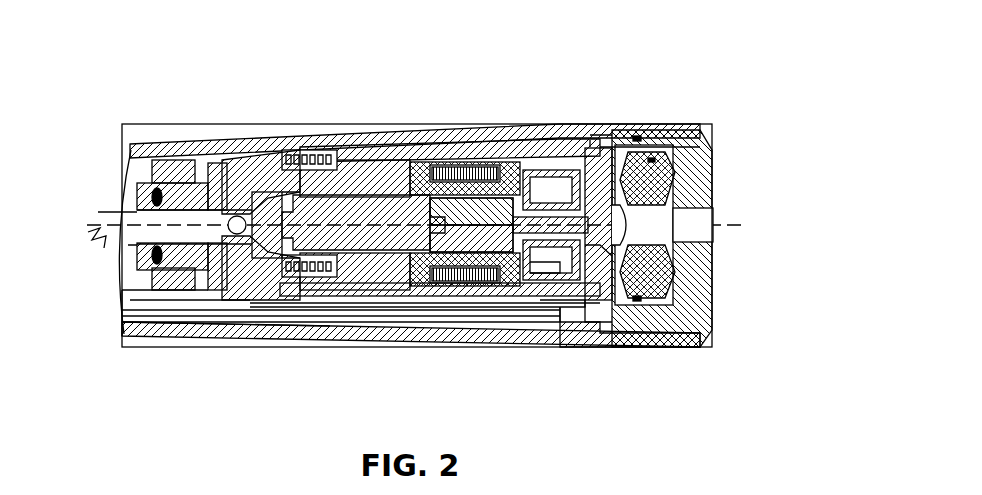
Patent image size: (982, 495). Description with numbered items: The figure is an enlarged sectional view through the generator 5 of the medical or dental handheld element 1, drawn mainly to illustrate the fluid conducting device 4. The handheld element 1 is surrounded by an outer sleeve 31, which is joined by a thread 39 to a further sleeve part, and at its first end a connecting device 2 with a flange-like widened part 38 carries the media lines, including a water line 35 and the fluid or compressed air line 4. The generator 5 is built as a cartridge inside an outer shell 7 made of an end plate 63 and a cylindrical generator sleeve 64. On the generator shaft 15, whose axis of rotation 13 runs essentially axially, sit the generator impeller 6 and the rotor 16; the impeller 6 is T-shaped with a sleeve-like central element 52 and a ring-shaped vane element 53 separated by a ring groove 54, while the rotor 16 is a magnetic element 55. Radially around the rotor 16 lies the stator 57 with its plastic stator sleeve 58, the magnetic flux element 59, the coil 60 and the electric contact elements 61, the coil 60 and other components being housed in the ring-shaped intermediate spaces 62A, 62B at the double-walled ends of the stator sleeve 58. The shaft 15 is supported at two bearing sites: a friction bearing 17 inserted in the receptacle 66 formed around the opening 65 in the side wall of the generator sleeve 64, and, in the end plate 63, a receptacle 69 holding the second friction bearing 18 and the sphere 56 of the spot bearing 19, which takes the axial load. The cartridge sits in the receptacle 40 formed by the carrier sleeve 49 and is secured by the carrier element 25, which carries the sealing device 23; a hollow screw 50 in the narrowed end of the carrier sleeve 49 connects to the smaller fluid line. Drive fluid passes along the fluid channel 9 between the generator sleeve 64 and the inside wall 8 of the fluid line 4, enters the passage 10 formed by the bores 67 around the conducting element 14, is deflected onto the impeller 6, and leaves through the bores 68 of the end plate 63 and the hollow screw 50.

The handheld element 1 is at (475, 55).
The connecting device 2 is at (693, 147).
The fluid conducting device 4 is at (123, 212).
The generator 5 is at (512, 116).
The generator impeller 6 is at (318, 247).
The outer shell 7 is at (468, 300).
The inside wall 8 is at (441, 292).
The fluid channel 9 is at (430, 300).
The passage 10 is at (398, 282).
The axis of rotation 13 is at (107, 241).
The conducting element 14 is at (380, 168).
The generator shaft 15 is at (307, 237).
The rotor 16 is at (437, 205).
The friction bearing 17 is at (595, 195).
The second friction bearing 18 is at (278, 182).
The spot bearing 19 is at (268, 172).
The sealing device 23 is at (637, 135).
The carrier element 25 is at (640, 175).
The outer sleeve 31 is at (158, 140).
The water line 35 is at (162, 307).
The flange-like widened part 38 is at (680, 323).
The thread 39 is at (600, 148).
The receptacle 40 is at (232, 290).
The carrier sleeve 49 is at (150, 177).
The hollow screw 50 is at (160, 262).
The central element 52 is at (323, 200).
The vane element 53 is at (313, 178).
The ring groove 54 is at (352, 258).
The magnetic element 55 is at (446, 112).
The sphere 56 is at (230, 170).
The stator 57 is at (473, 158).
The stator sleeve 58 is at (558, 293).
The magnetic flux element 59 is at (505, 288).
The coil 60 is at (540, 268).
The electric contact elements 61 is at (590, 297).
The ring-shaped intermediate space 62A is at (420, 173).
The ring-shaped intermediate space 62B is at (563, 187).
The end plate 63 is at (268, 262).
The generator sleeve 64 is at (486, 268).
The opening 65 is at (600, 235).
The receptacle 66 is at (620, 208).
The bores 67 is at (385, 304).
The bores 68 is at (242, 206).
The receptacle 69 is at (243, 258).